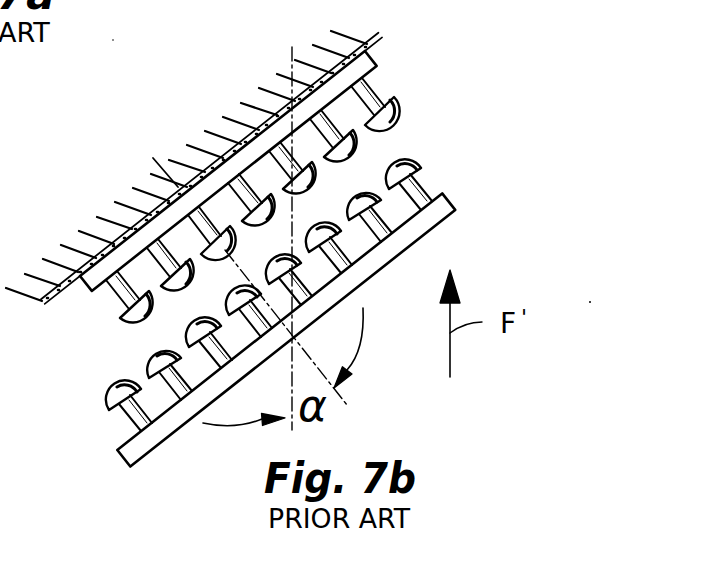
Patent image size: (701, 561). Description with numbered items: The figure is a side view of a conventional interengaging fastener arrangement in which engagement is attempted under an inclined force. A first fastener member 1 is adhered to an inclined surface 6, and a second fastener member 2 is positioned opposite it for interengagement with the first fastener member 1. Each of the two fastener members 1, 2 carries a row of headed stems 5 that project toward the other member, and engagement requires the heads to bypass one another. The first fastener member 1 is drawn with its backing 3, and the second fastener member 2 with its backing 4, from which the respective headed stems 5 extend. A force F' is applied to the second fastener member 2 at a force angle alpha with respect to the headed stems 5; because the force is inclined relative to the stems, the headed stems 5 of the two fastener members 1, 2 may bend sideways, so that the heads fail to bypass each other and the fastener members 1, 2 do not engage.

The first fastener member 1 is at (269, 174).
The second fastener member 2 is at (305, 306).
The backing of first fastener strip 3 is at (87, 291).
The backing of second fastener strip 4 is at (117, 457).
The headed stems 5 is at (372, 96).
The inclined surface 6 is at (62, 286).